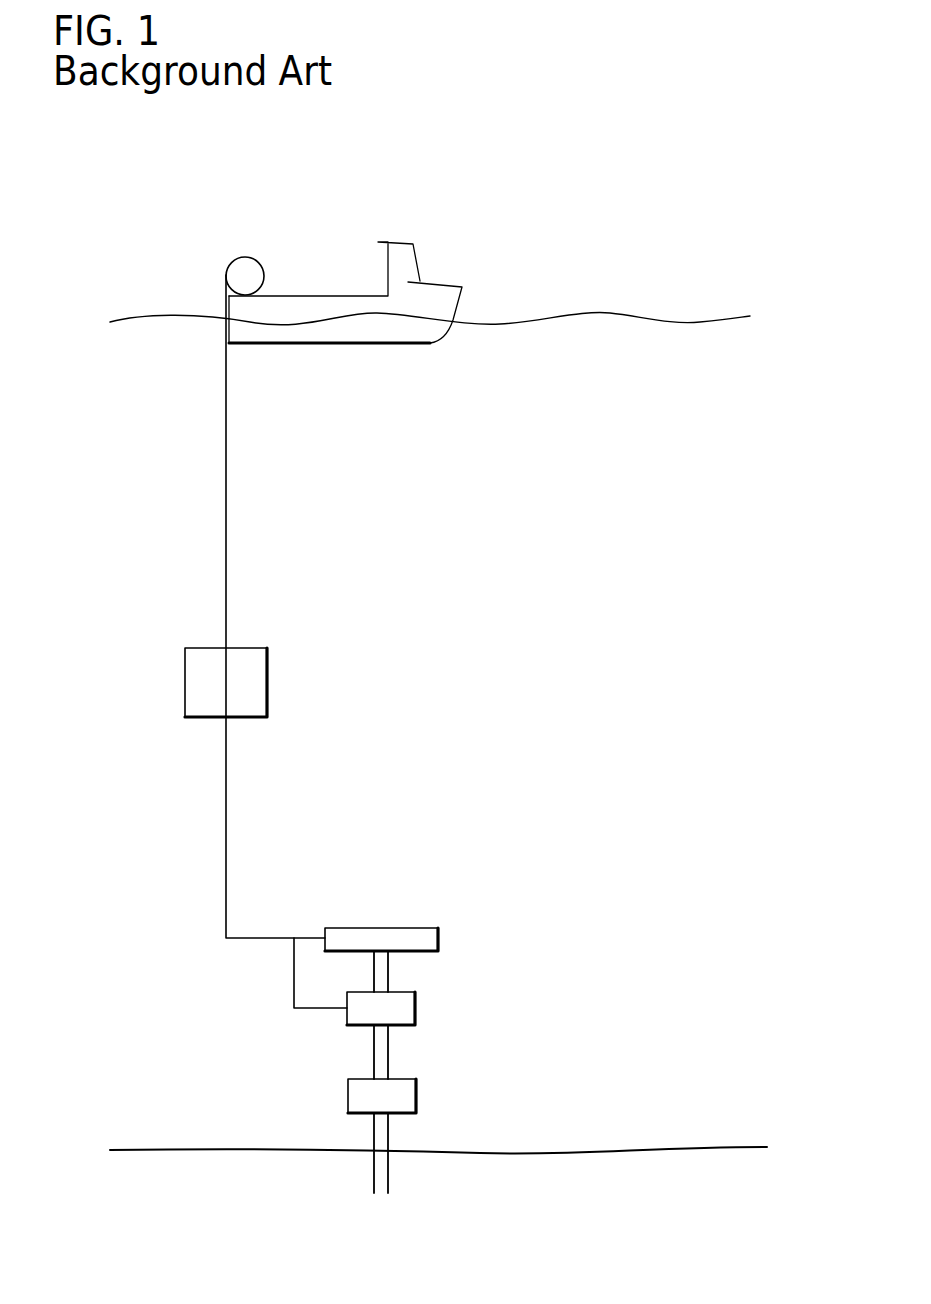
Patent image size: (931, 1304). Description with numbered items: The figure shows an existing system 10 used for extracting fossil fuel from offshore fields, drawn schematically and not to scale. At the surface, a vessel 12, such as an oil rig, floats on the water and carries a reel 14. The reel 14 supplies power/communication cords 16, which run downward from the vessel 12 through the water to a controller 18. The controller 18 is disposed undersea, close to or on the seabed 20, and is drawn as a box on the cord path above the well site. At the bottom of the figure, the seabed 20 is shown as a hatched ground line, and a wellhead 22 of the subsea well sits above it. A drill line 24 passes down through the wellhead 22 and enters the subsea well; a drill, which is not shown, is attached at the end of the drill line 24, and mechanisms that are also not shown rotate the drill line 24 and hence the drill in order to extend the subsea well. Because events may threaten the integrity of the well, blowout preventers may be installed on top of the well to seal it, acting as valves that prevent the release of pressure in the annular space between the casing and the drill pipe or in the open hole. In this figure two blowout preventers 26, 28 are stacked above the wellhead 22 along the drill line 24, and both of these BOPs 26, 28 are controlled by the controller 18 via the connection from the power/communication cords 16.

The system 10 is at (377, 180).
The vessel 12 is at (433, 282).
The reel 14 is at (233, 259).
The power/communication cords 16 is at (227, 473).
The controller 18 is at (268, 682).
The seabed 20 is at (580, 1150).
The wellhead 22 is at (405, 1097).
The drill line 24 is at (387, 1168).
The blowout preventer (BOP) 26 is at (417, 1007).
The blowout preventer (BOP) 28 is at (440, 937).